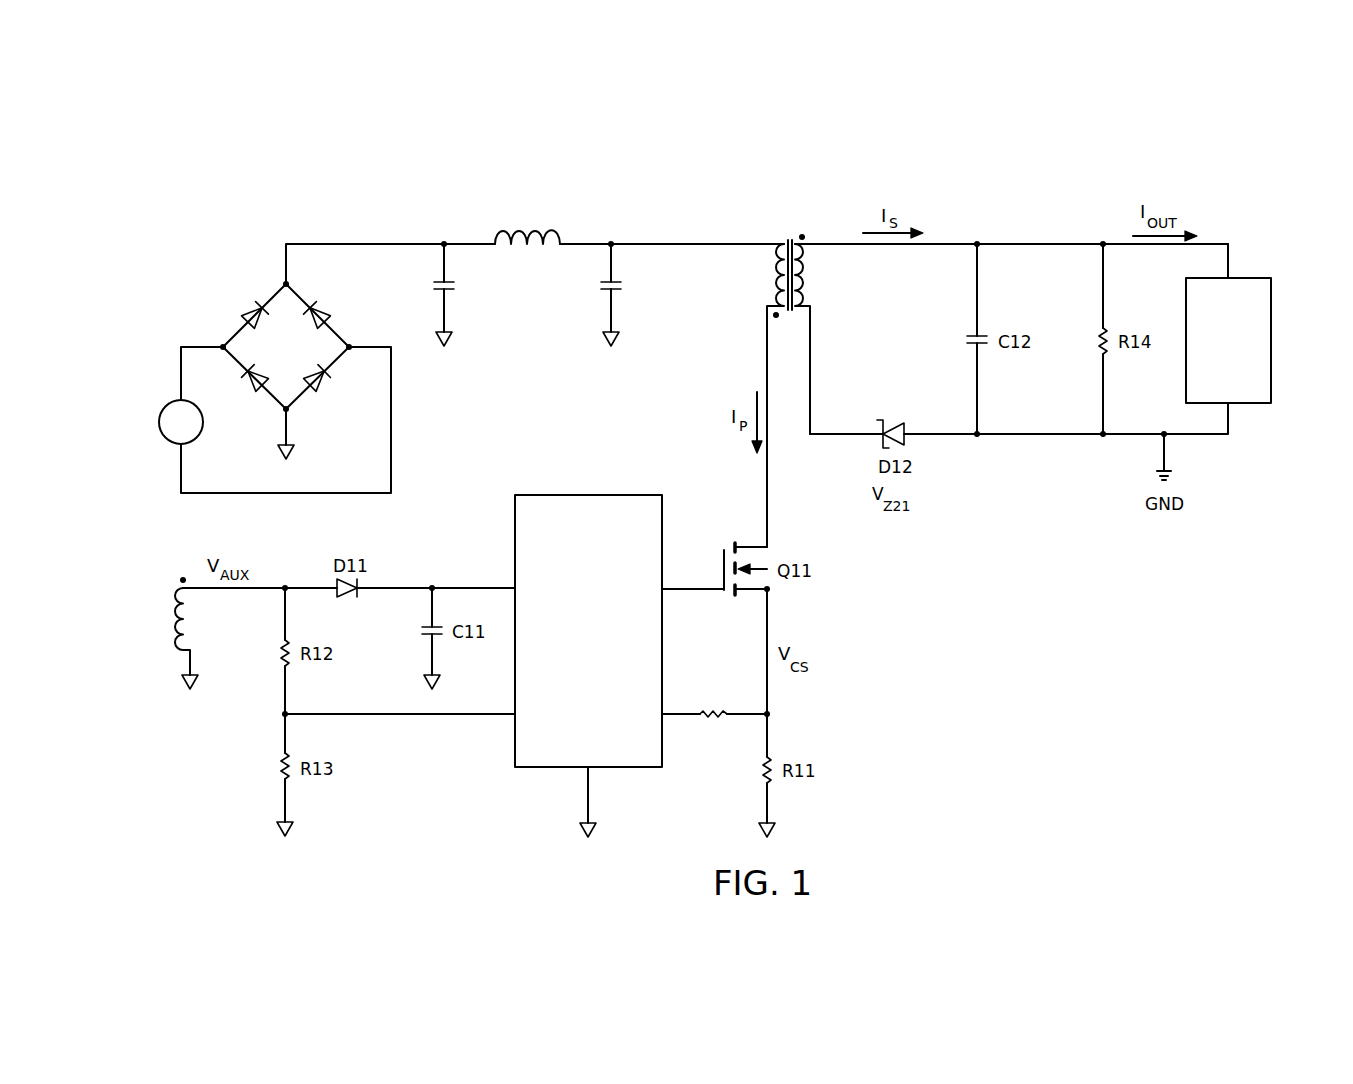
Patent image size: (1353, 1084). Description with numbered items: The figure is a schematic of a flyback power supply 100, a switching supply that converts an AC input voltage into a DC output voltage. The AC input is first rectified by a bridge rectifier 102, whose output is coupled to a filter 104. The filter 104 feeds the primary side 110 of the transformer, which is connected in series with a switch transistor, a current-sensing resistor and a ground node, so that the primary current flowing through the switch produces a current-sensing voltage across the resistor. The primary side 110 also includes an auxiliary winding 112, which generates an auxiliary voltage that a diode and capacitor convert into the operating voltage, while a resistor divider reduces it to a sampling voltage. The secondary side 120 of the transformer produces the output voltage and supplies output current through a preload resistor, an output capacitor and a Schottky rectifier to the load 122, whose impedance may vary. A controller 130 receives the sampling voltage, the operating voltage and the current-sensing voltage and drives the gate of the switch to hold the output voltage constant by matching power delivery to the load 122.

The flyback power supply 100 is at (192, 178).
The bridge rectifier 102 is at (232, 293).
The filter 104 is at (517, 210).
The primary side 110 is at (758, 232).
The auxiliary winding 112 is at (148, 660).
The secondary side 120 is at (822, 232).
The load 122 is at (1247, 371).
The controller 130 is at (580, 495).